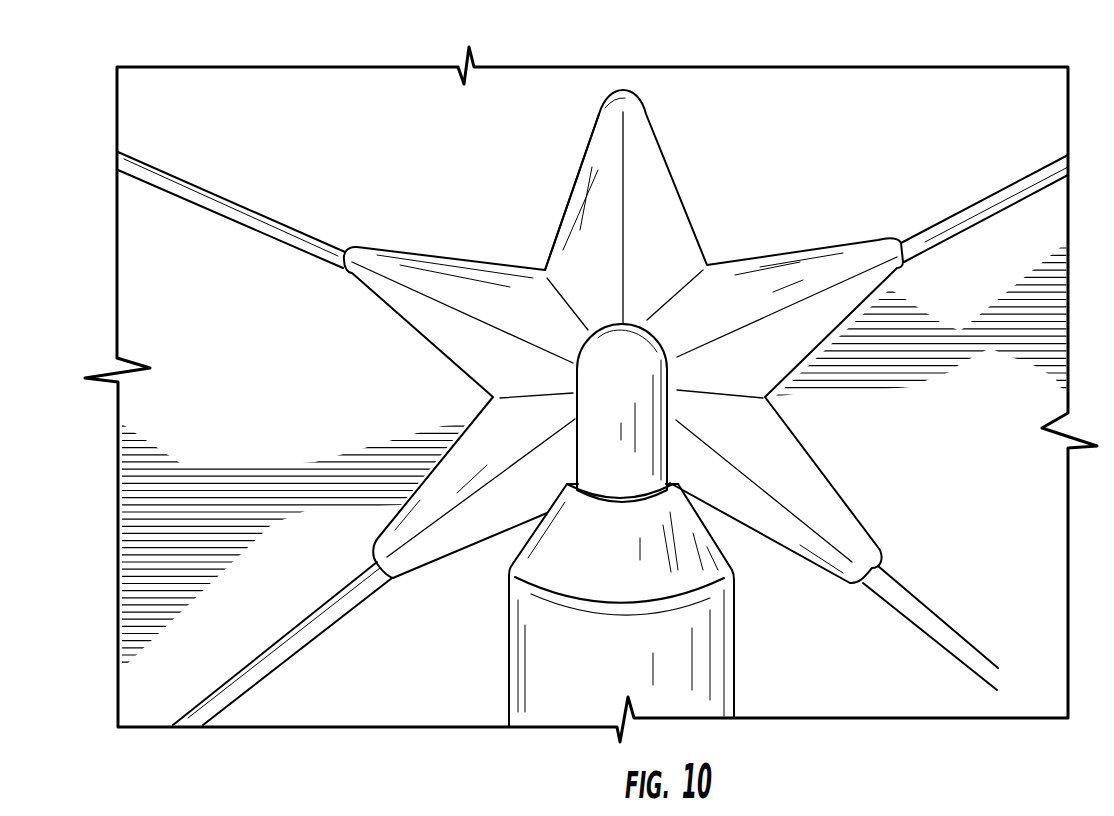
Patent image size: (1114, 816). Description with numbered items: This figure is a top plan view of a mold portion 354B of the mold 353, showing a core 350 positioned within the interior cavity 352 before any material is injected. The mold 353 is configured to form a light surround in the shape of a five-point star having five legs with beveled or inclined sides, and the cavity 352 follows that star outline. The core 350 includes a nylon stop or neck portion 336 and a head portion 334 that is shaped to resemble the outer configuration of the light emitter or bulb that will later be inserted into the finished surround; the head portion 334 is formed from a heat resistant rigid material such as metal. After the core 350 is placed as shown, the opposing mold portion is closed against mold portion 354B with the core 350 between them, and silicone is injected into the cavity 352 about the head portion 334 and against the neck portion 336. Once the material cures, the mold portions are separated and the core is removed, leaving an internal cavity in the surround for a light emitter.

The head portion 334 is at (668, 350).
The neck portion 336 is at (552, 705).
The core 350 is at (497, 662).
The cavity 352 is at (840, 583).
The mold 353 is at (716, 107).
The mold portion 354B is at (550, 107).